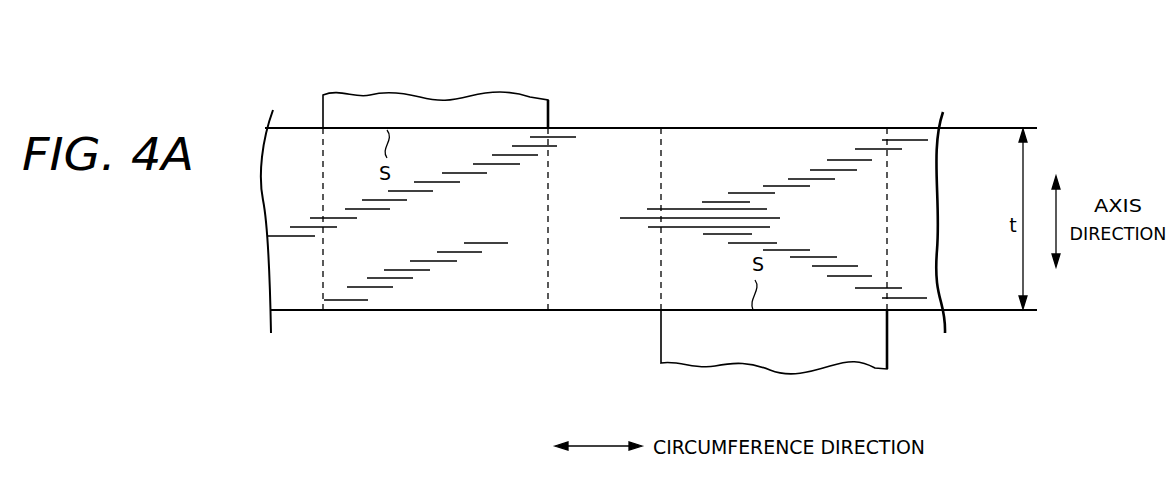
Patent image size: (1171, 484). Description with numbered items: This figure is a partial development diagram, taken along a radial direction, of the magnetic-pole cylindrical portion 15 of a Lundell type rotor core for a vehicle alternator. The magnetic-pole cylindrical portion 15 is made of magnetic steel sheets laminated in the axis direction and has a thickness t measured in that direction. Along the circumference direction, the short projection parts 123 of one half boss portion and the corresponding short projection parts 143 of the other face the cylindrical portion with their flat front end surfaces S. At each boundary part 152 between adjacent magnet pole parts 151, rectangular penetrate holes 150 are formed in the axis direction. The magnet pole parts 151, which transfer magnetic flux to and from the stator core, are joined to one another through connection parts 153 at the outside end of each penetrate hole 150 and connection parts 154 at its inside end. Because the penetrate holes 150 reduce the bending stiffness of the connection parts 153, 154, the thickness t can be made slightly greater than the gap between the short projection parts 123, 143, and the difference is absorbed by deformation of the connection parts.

The magnetic-pole cylindrical portion 15 is at (948, 203).
The short projection parts 123 is at (468, 105).
The short projection parts 143 is at (855, 343).
The penetrate holes 150 is at (288, 140).
The magnet pole parts 151 is at (757, 185).
The boundary part 152 is at (579, 158).
The connection parts 153 is at (572, 290).
The connection parts 154 is at (636, 283).